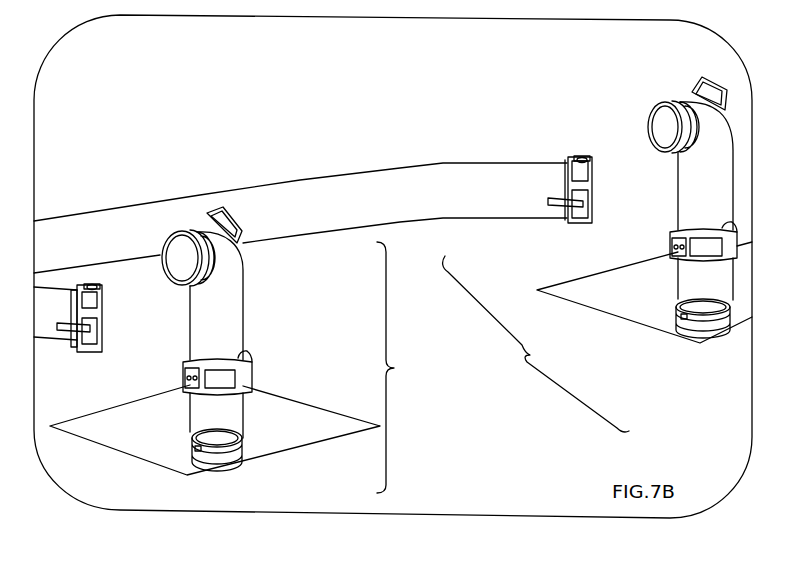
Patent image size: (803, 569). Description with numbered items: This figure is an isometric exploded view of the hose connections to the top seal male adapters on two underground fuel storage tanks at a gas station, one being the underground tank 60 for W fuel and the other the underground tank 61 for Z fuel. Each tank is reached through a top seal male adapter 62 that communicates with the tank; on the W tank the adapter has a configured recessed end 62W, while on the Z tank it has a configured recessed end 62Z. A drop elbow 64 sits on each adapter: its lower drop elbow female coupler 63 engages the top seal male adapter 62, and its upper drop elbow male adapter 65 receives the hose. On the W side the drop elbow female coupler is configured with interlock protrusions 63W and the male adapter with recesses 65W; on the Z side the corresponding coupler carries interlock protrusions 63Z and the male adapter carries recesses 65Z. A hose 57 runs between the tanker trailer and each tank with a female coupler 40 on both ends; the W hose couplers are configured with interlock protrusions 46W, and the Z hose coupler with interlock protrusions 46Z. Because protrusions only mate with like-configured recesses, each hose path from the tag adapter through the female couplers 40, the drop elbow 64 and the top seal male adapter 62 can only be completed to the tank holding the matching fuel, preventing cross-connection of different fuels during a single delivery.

The female coupler 40 is at (88, 350).
The interlock protrusion W 46W is at (101, 285).
The interlock protrusion Z 46Z is at (582, 156).
The hose 57 is at (48, 337).
The underground tank for W fuel 60 is at (260, 450).
The underground tank for Z fuel 61 is at (646, 322).
The top seal male adapter 62 is at (235, 455).
The configured recessed end W 62W is at (193, 443).
The configured recessed end Z 62Z is at (686, 318).
The drop elbow female coupler 63 is at (220, 373).
The drop elbow female coupler interlock protrusions W 63W is at (190, 394).
The drop elbow female coupler interlock protrusions Z 63Z is at (672, 249).
The drop elbow 64 is at (224, 330).
The drop elbow male adapter 65 is at (203, 269).
The drop elbow male adapter recesses W 65W is at (178, 231).
The drop elbow male adapter recesses Z 65Z is at (667, 100).